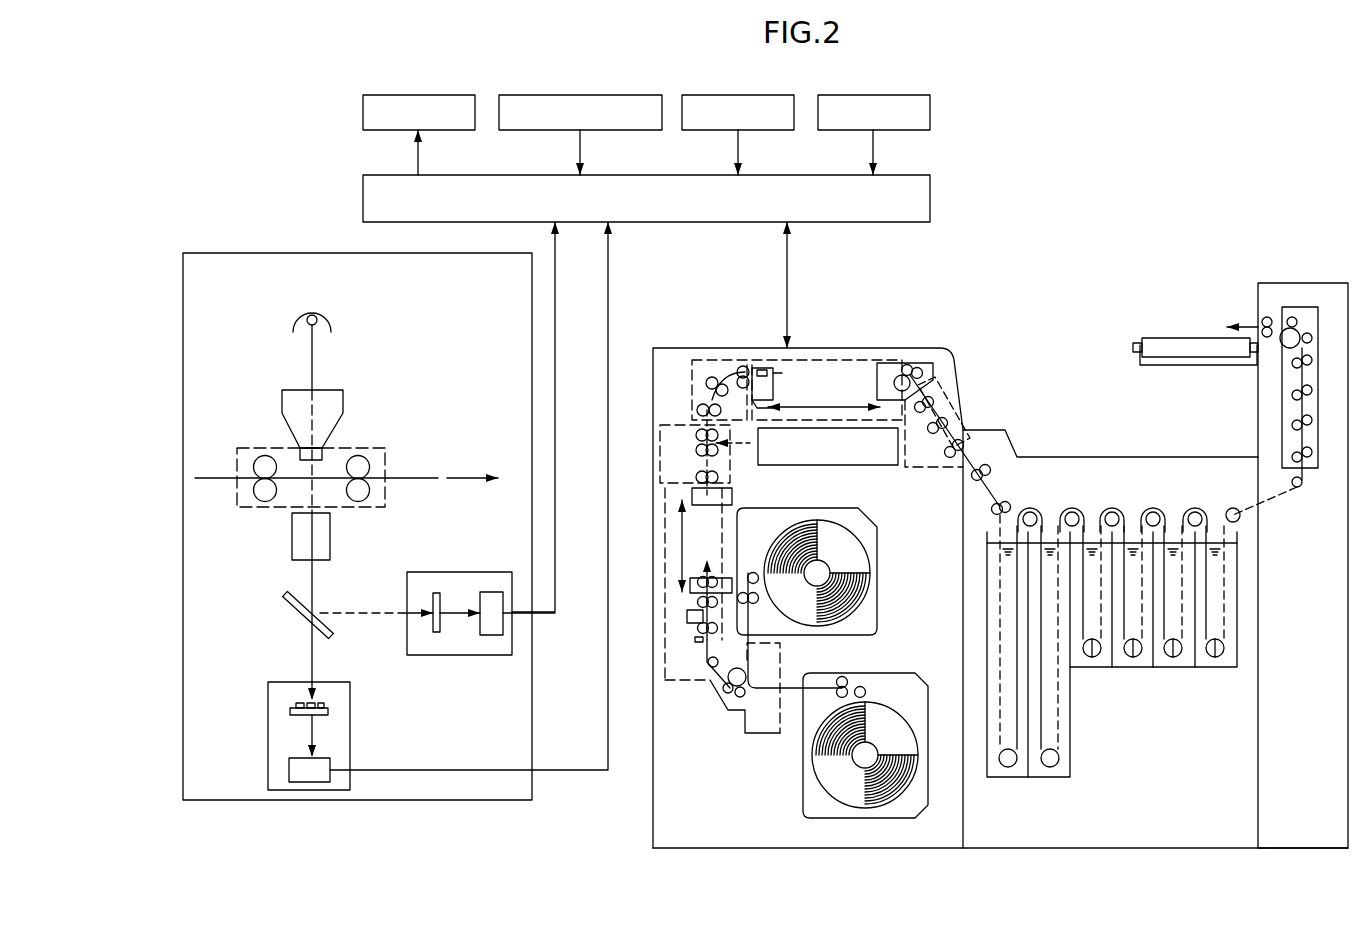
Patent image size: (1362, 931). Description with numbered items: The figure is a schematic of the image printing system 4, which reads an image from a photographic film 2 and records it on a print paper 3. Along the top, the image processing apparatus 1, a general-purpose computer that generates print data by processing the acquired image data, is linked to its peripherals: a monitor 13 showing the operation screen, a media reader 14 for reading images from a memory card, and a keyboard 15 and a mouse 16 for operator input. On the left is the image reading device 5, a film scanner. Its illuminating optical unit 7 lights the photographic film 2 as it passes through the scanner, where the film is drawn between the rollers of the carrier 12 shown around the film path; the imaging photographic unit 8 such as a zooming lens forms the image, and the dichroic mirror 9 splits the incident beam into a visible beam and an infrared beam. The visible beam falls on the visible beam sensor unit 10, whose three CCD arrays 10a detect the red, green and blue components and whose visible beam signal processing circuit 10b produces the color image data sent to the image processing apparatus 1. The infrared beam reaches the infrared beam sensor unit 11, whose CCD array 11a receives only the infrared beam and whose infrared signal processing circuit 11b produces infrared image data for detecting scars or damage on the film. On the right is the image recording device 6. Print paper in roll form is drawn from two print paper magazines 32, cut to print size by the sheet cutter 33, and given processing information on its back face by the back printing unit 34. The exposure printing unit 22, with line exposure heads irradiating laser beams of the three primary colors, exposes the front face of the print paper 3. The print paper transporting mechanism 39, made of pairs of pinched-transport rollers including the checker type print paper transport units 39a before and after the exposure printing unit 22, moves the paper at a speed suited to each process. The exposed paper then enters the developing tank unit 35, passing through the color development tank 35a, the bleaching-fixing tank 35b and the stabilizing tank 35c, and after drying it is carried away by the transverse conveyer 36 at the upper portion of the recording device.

The image processing apparatus 1 is at (362, 199).
The photographic film 2 is at (415, 478).
The print paper 3 is at (726, 377).
The image printing system 4 is at (1145, 150).
The image reading device 5 is at (283, 253).
The image recording device 6 is at (988, 293).
The illuminating optical unit 7 is at (332, 325).
The imaging photographic unit 8 is at (292, 537).
The dichroic mirror 9 is at (283, 597).
The visible beam sensor unit 10 is at (350, 723).
The CCD arrays 10a is at (292, 708).
The visible beam signal processing circuit 10b is at (290, 762).
The infrared beam sensor unit 11 is at (450, 572).
The CCD array 11a is at (434, 632).
The infrared signal processing circuit 11b is at (495, 635).
The film carrier 12 is at (262, 448).
The monitor 13 is at (363, 112).
The media reader 14 is at (499, 103).
The keyboard 15 is at (765, 95).
The mouse 16 is at (930, 110).
The exposure printing unit 22 is at (848, 457).
The print paper magazines 32 is at (877, 610).
The sheet cutter 33 is at (695, 640).
The back printing unit 34 is at (687, 618).
The developing tank unit 35 is at (1112, 670).
The color development tank 35a is at (1012, 777).
The bleaching-fixing tank 35b is at (1060, 777).
The stabilizing tank 35c is at (1215, 667).
The transverse conveyer 36 is at (1155, 338).
The print paper transporting mechanism 39 is at (705, 378).
The checker type print paper transport units 39a is at (843, 360).